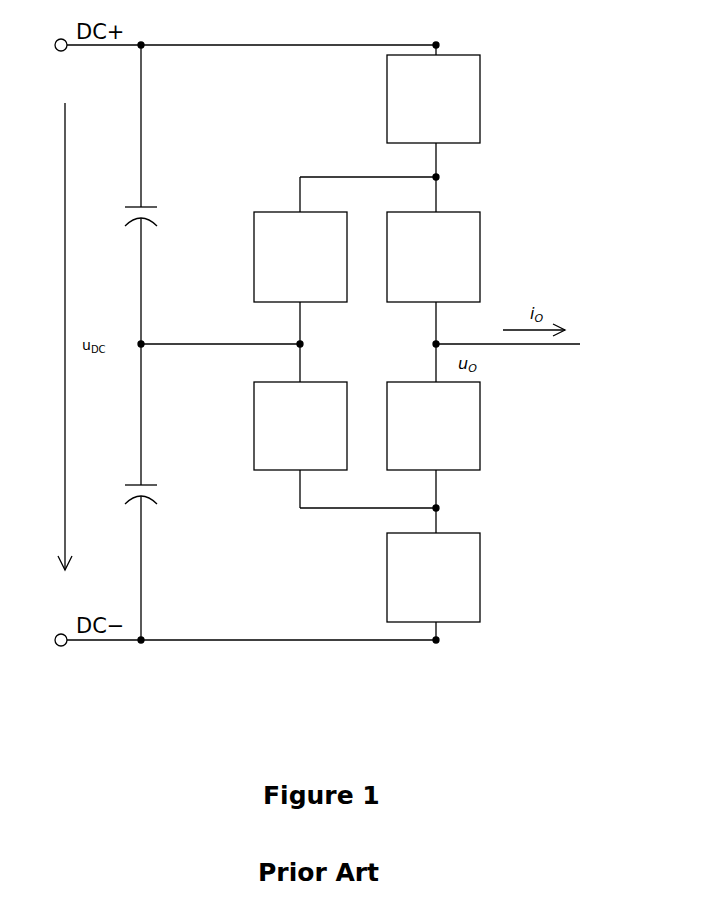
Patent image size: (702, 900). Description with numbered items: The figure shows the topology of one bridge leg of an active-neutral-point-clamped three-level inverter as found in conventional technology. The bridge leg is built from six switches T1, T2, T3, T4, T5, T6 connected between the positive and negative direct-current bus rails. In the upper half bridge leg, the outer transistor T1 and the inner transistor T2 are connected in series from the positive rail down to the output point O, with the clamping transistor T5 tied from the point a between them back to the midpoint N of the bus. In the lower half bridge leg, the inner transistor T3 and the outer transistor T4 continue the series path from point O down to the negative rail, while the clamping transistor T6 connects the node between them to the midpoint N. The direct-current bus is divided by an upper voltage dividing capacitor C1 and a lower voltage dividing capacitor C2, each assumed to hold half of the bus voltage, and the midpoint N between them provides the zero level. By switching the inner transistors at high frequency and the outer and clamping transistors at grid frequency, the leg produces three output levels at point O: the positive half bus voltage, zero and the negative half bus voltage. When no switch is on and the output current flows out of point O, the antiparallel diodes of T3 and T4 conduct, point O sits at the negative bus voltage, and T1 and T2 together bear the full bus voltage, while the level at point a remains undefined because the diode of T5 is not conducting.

The outer transistor of the upper half bridge leg T1 is at (433, 99).
The inner transistor of the upper half bridge leg T2 is at (433, 257).
The inner transistor of the lower half bridge leg T3 is at (433, 426).
The outer transistor of the lower half bridge leg T4 is at (433, 577).
The clamping transistor of the upper half bridge leg T5 is at (300, 257).
The clamping transistor of the lower half bridge leg T6 is at (300, 426).
The upper DC-link capacitor C1 is at (141, 194).
The lower DC-link capacitor C2 is at (141, 492).
The neutral point N is at (222, 332).
The output point of the bridge leg O is at (491, 349).
The intermediate point of the upper half bridge leg a is at (447, 179).